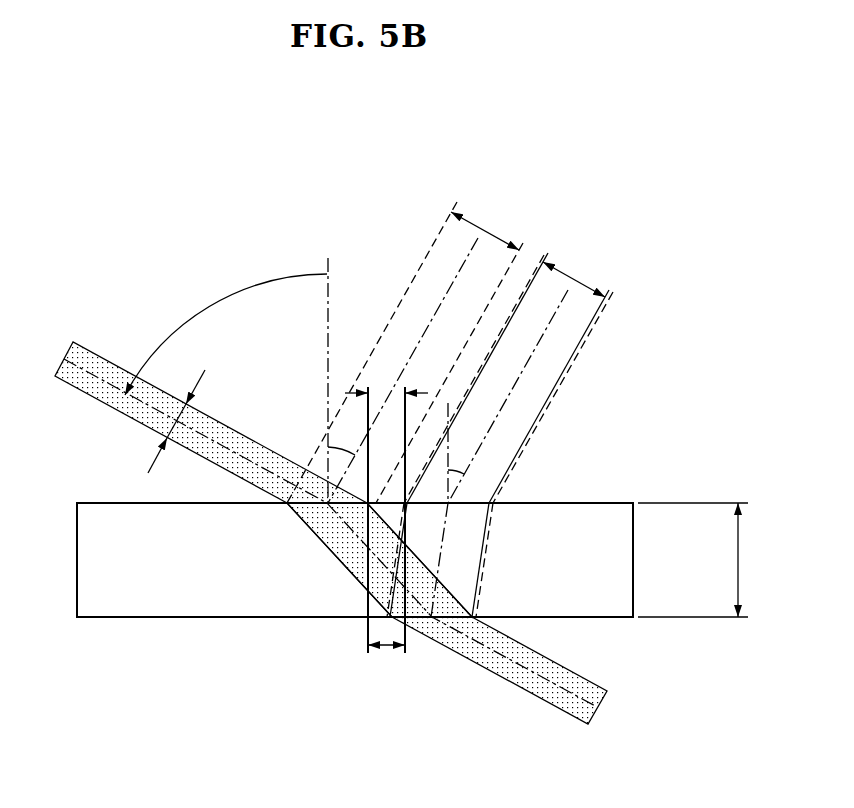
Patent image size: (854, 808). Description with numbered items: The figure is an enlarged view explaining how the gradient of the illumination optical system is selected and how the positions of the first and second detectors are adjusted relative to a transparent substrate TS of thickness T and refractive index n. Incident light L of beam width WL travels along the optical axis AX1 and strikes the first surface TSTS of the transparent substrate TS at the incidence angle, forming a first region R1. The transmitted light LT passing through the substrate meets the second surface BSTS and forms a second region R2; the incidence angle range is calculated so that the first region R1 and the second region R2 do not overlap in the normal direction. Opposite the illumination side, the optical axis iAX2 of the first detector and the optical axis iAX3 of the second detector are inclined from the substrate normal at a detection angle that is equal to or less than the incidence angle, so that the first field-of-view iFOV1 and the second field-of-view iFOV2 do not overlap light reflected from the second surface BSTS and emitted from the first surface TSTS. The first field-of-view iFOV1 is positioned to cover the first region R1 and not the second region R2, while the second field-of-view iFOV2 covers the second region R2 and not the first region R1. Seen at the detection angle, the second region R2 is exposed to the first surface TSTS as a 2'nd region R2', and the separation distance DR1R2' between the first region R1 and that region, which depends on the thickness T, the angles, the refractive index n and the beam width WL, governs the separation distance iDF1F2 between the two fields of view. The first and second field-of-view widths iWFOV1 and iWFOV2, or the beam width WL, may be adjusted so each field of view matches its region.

The transparent substrate TS is at (635, 559).
The refractive index of the transparent substrate n is at (93, 559).
The first surface of the transparent substrate TSTS is at (602, 503).
The second surface of the transparent substrate BSTS is at (603, 618).
The thickness of the transparent substrate T is at (699, 560).
The incident light L is at (212, 462).
The transmitted light LT is at (348, 569).
The optical axis of the illumination optical system AX1 is at (103, 380).
The beam width of the incident light WL is at (176, 418).
The first region R1 is at (320, 516).
The second region R2 is at (430, 655).
The 2'nd region R2' is at (499, 534).
The separation distance between the first region and the 2'nd region DR1R2' is at (382, 532).
The separation distance between the first and second field-of-views iDF1F2 is at (386, 377).
The first field-of-view iFOV1 is at (438, 233).
The optical axis of the first detector iAX2 is at (451, 285).
The first field-of-view width iWFOV1 is at (496, 224).
The second field-of-view iFOV2 is at (607, 332).
The optical axis of the second detector iAX3 is at (540, 340).
The second field-of-view width iWFOV2 is at (586, 275).